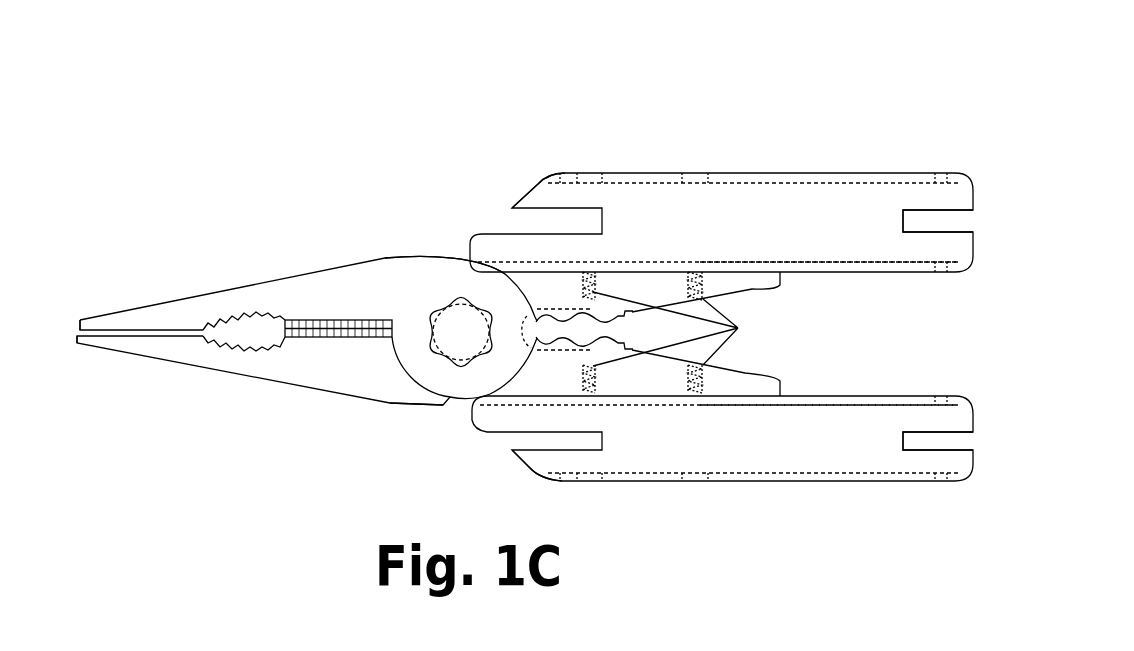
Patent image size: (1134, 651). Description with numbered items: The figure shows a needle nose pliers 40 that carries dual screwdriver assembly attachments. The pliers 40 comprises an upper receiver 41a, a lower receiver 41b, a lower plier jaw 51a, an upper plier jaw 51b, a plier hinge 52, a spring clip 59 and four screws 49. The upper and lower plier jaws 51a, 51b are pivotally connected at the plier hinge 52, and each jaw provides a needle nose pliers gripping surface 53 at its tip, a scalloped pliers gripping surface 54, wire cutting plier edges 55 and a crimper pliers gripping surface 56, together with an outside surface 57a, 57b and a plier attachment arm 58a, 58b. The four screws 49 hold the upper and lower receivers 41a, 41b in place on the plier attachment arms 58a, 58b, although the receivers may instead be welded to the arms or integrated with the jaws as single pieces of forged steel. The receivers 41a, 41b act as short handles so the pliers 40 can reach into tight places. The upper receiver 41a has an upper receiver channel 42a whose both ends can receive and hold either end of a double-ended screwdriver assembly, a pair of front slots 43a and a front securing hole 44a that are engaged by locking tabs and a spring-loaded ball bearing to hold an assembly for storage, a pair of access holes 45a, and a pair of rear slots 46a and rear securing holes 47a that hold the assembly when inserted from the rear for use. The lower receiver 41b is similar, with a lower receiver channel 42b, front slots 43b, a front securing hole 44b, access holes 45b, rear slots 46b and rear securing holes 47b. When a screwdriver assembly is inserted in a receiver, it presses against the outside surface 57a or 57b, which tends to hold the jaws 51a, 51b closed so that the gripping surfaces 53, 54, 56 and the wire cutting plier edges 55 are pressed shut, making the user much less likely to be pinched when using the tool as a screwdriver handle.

The needle nose pliers 40 is at (430, 212).
The upper receiver 41a is at (757, 135).
The lower receiver 41b is at (773, 518).
The upper receiver channel 42a is at (898, 263).
The lower receiver channel 42b is at (898, 404).
The front slots 43a is at (538, 205).
The front slots 43b is at (536, 452).
The front securing hole 44a is at (567, 172).
The front securing hole 44b is at (563, 483).
The access holes 45a is at (688, 171).
The access holes 45b is at (688, 483).
The rear slots 46a is at (912, 209).
The rear slots 46b is at (950, 451).
The rear securing holes 47a is at (938, 260).
The rear securing holes 47b is at (933, 478).
The screws 49 is at (683, 329).
The lower plier jaw 51a is at (237, 415).
The upper plier jaw 51b is at (252, 248).
The plier hinge 52 is at (432, 306).
The needle nose pliers gripping surface 53 is at (133, 336).
The scalloped pliers gripping surface 54 is at (218, 338).
The wire cutting plier edges 55 is at (337, 340).
The crimper pliers gripping surface 56 is at (565, 309).
The outside surface 57a is at (412, 407).
The outside surface 57b is at (411, 257).
The plier attachment arm 58a is at (752, 289).
The plier attachment arm 58b is at (745, 373).
The spring clip 59 is at (548, 352).